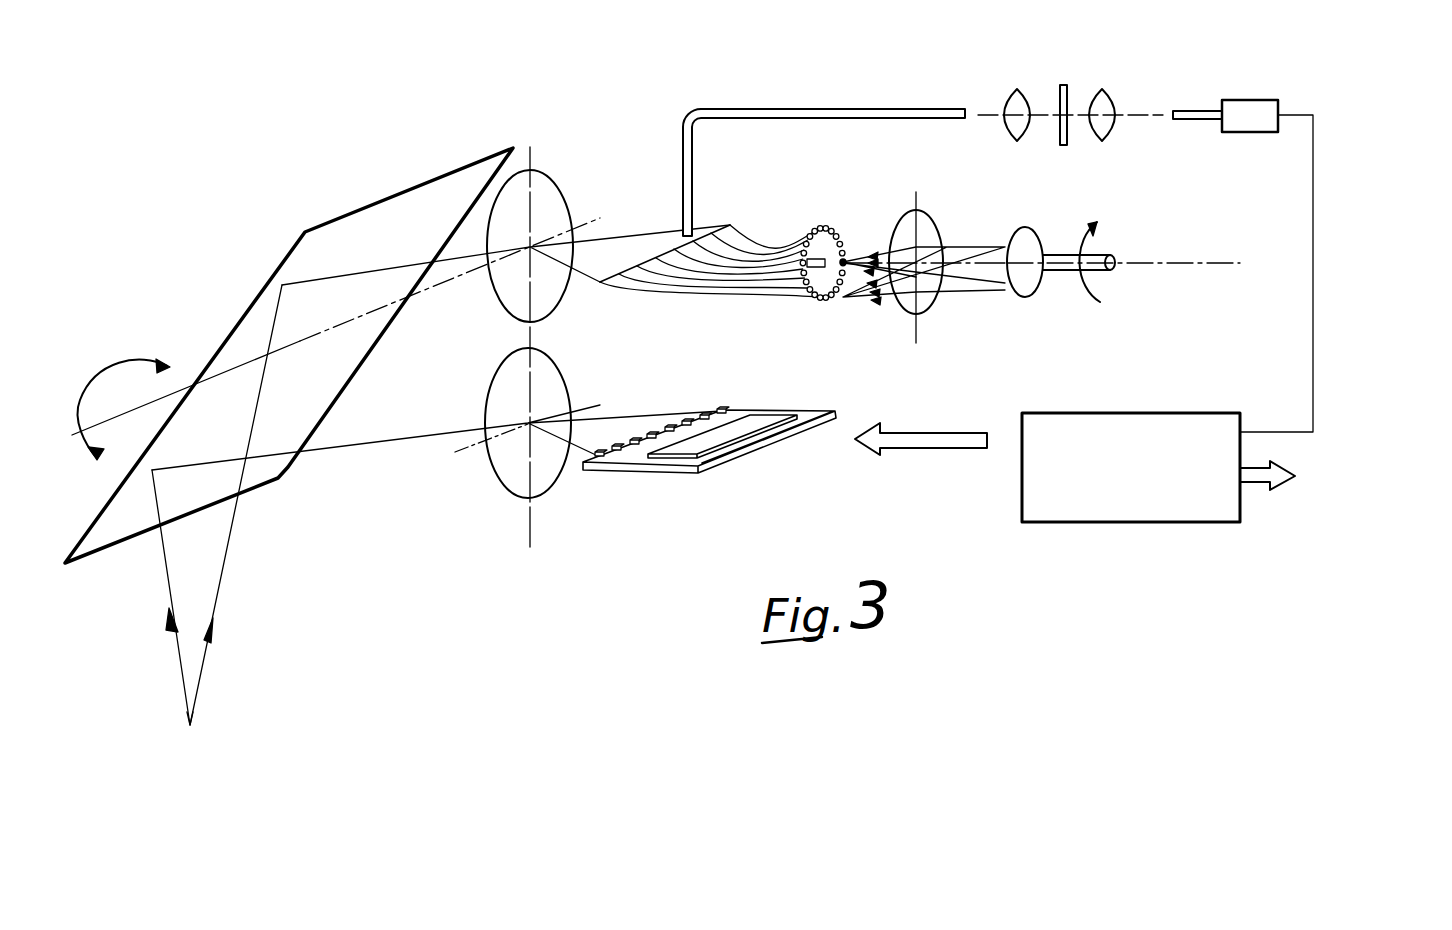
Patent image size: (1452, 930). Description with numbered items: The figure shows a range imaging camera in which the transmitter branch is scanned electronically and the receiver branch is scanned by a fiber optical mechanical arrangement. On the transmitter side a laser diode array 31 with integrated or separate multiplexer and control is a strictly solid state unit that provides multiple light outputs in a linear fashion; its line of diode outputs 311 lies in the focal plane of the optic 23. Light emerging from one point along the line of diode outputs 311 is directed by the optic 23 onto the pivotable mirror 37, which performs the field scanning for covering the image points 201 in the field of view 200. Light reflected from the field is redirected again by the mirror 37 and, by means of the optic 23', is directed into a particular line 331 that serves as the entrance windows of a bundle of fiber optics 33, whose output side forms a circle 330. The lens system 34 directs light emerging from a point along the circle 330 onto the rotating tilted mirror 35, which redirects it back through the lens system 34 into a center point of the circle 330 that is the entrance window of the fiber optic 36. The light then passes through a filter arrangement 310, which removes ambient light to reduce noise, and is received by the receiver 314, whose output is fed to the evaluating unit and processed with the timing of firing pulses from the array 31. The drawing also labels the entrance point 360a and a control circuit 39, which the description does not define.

The pivotable mirror 37 is at (412, 189).
The optic 23' is at (543, 219).
The optic 23 is at (512, 460).
The image points 201 is at (187, 727).
The field of view 200 is at (201, 777).
The bundle of fiber optics 33 is at (750, 290).
The entrance line 331 is at (637, 258).
The fiber optic 36 is at (692, 143).
The circle 330 is at (822, 226).
The fiber end 360a is at (836, 252).
The lens system 34 is at (927, 310).
The rotating tilted mirror 35 is at (1033, 302).
The filter arrangement 310 is at (1065, 82).
The receiver 314 is at (1247, 98).
The laser diode array 31 is at (650, 464).
The line of diode outputs 311 is at (633, 428).
The control circuit 39 is at (1163, 522).